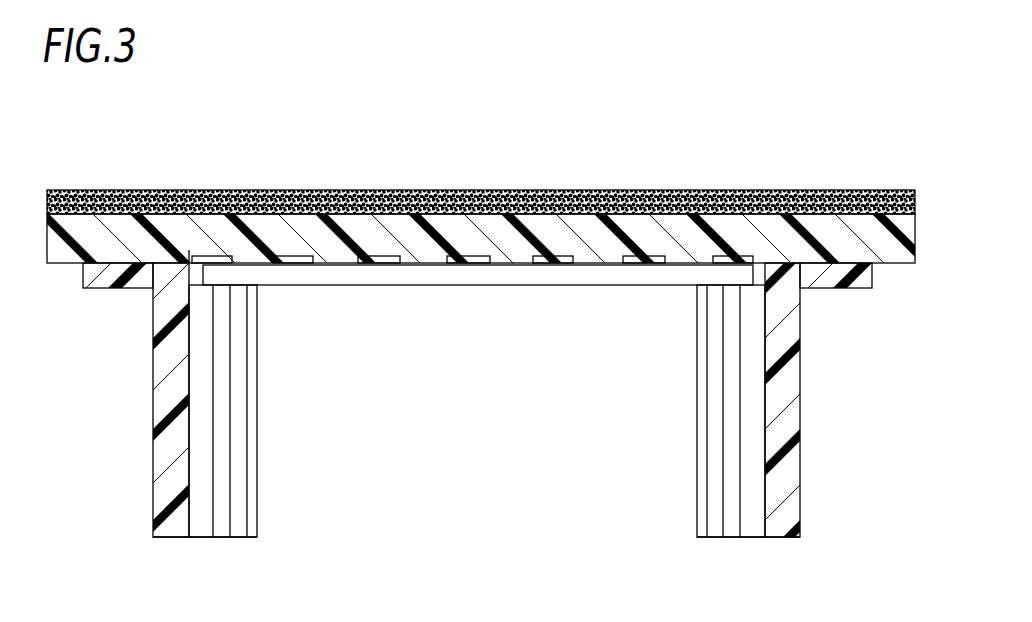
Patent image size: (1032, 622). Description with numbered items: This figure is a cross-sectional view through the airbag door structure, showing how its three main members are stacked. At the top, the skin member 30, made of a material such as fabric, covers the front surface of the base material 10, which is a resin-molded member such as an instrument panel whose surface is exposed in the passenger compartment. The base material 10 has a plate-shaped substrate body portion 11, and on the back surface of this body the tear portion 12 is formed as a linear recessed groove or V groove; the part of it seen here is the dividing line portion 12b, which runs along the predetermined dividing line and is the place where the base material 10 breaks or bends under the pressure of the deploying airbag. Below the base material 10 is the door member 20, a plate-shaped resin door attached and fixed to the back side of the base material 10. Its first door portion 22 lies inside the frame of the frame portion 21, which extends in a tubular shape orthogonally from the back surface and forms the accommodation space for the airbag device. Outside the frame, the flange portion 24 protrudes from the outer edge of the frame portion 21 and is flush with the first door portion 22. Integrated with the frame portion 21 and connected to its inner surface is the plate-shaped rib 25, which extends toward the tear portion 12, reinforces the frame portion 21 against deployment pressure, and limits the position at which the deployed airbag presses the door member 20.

The base material 10 is at (472, 322).
The substrate body portion 11 is at (325, 263).
The tear portion 12 is at (485, 194).
The dividing line portion 12b is at (500, 240).
The door member 20 is at (175, 530).
The frame portion 21 is at (170, 455).
The first door portion 22 is at (510, 285).
The flange portion 24 is at (110, 280).
The rib 25 is at (203, 514).
The skin member 30 is at (105, 188).